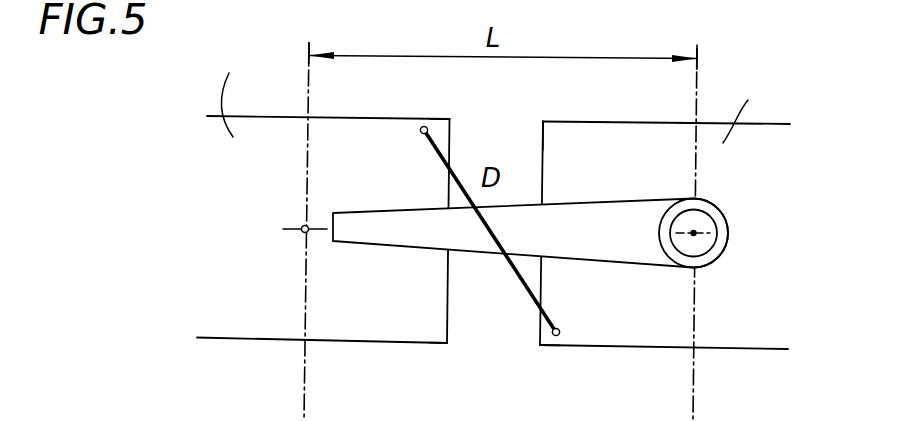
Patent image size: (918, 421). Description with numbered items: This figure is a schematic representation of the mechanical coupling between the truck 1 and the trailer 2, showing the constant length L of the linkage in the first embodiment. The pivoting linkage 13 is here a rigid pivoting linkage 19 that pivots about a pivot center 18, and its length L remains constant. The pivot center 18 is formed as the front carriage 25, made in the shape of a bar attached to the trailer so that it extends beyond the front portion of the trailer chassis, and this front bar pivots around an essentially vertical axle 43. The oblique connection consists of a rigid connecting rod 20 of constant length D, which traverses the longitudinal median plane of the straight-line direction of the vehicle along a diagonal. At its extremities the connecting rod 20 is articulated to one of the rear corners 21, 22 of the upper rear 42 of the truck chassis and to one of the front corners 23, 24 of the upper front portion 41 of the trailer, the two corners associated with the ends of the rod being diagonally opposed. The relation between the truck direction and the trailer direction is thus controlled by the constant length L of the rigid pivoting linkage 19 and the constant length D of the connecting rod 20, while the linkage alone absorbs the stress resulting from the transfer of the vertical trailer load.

The truck 1 is at (348, 223).
The trailer 2 is at (665, 209).
The pivoting linkage 13 is at (554, 305).
The rigid pivoting linkage 19 is at (613, 246).
The pivot center 18 is at (723, 278).
The rigid connecting rod 20 is at (456, 175).
The rear corner of the truck 21 is at (439, 113).
The rear corner of the truck 22 is at (430, 330).
The front corner of the trailer 23 is at (548, 131).
The front corner of the trailer 24 is at (551, 363).
The front carriage 25 is at (727, 247).
The upper front portion of the trailer 41 is at (543, 158).
The upper rear of truck chassis 42 is at (447, 318).
The vertical axle 43 is at (694, 233).